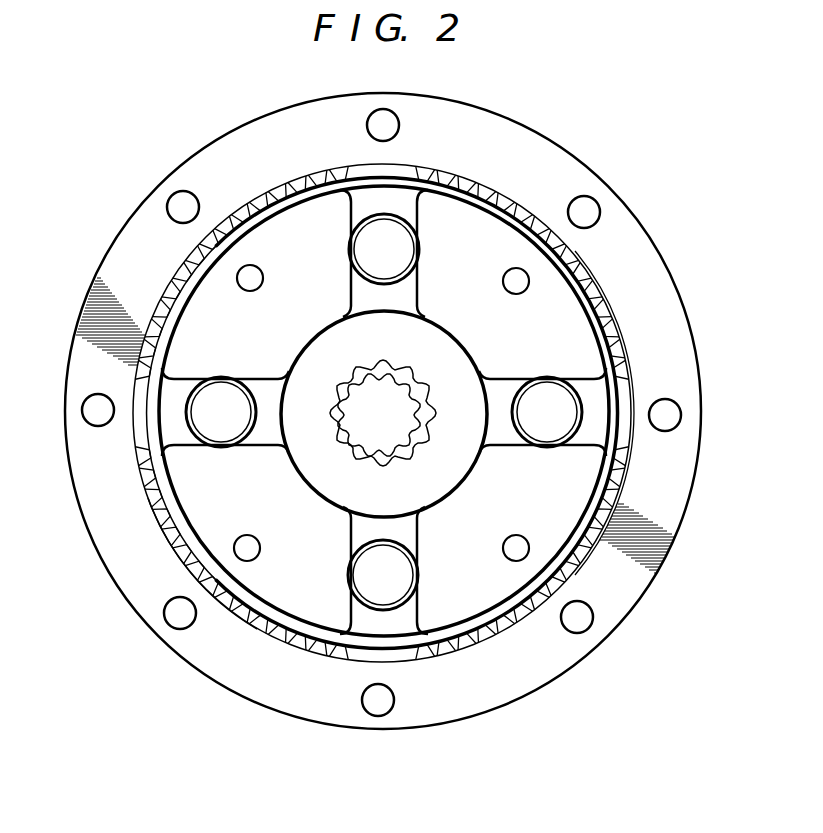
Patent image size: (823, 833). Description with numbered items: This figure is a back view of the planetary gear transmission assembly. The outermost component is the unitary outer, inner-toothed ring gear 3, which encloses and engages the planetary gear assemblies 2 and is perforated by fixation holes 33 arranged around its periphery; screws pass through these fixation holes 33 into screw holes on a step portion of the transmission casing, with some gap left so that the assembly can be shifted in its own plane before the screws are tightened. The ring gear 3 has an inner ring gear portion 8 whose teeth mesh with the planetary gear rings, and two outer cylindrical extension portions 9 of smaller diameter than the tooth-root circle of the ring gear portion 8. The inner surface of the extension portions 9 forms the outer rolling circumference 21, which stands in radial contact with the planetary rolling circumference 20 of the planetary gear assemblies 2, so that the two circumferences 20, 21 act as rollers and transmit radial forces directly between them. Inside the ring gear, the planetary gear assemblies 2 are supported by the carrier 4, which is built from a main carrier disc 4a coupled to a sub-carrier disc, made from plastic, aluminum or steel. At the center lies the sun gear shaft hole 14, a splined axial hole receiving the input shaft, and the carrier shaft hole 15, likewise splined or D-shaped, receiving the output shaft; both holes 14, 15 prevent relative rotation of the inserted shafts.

The planetary gear assemblies 2 is at (410, 170).
The unitary outer, inner-toothed ring gear 3 is at (633, 262).
The carrier 4 is at (474, 598).
The main carrier disc 4a is at (267, 588).
The inner ring gear portion 8 is at (150, 506).
The outer cylindrical extension portions 9 is at (140, 541).
The sun gear shaft hole 14 is at (346, 432).
The carrier shaft hole 15 is at (339, 390).
The planetary rolling circumference 20 is at (630, 449).
The outer rolling circumference 21 is at (618, 490).
The fixation holes 33 is at (582, 204).